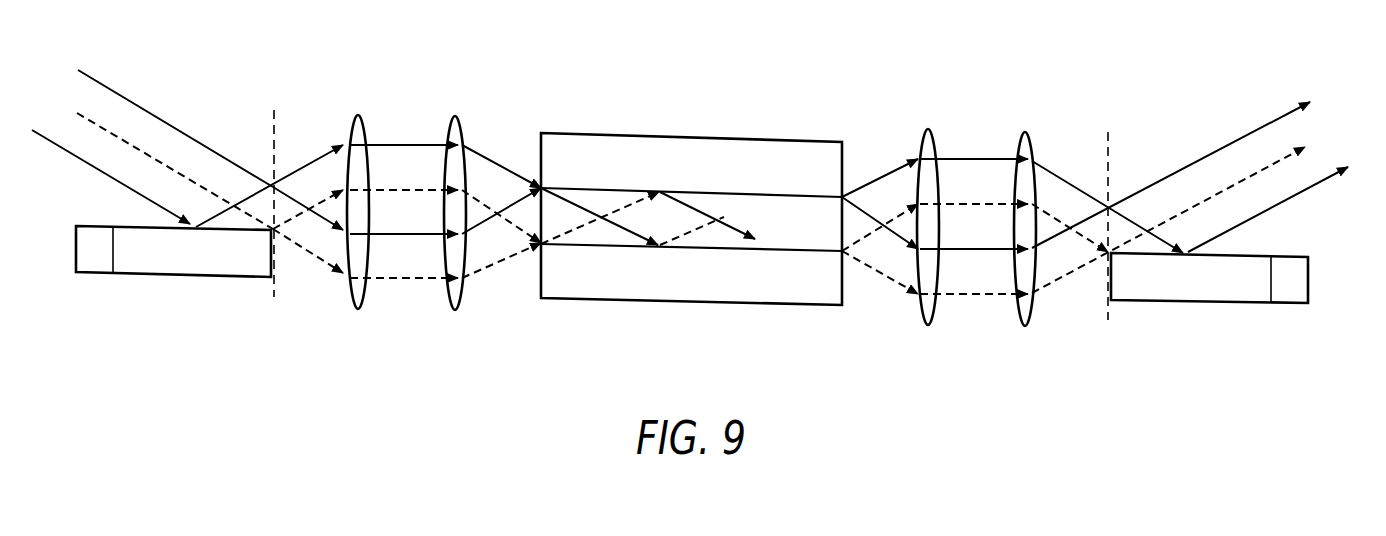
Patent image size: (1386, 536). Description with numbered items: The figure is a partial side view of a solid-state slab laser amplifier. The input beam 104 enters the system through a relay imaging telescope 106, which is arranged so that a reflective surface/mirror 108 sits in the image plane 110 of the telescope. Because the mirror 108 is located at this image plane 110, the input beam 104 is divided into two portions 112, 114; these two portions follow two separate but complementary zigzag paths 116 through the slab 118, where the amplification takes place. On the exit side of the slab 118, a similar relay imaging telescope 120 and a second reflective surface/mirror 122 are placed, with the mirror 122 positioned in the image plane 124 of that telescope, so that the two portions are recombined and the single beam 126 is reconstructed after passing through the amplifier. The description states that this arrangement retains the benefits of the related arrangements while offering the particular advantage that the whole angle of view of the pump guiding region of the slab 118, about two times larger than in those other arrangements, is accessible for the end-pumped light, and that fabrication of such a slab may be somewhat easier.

The input beam 104 is at (108, 98).
The relay imaging telescope 106 is at (455, 118).
The reflective surface/mirror 108 is at (113, 270).
The image plane 110 is at (274, 133).
The first portion of the beam 112 is at (503, 163).
The second portion of the beam 114 is at (503, 264).
The zigzag paths 116 is at (735, 211).
The slab 118 is at (714, 192).
The relay imaging telescope 120 is at (1025, 140).
The reflective surface/mirror 122 is at (1271, 260).
The image plane 124 is at (1109, 149).
The single beam 126 is at (1270, 124).